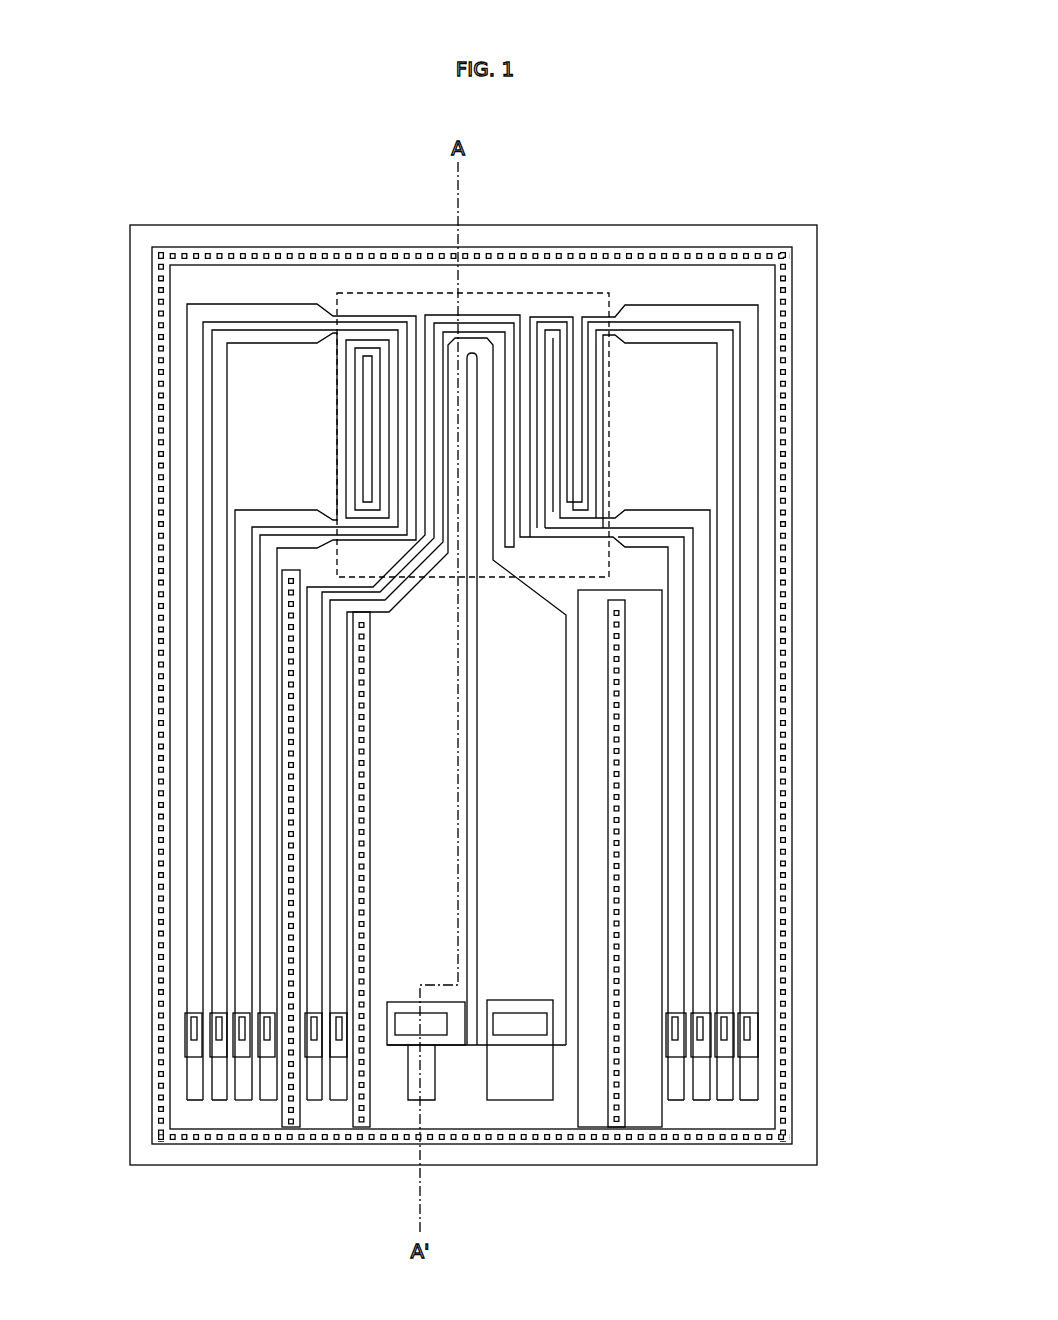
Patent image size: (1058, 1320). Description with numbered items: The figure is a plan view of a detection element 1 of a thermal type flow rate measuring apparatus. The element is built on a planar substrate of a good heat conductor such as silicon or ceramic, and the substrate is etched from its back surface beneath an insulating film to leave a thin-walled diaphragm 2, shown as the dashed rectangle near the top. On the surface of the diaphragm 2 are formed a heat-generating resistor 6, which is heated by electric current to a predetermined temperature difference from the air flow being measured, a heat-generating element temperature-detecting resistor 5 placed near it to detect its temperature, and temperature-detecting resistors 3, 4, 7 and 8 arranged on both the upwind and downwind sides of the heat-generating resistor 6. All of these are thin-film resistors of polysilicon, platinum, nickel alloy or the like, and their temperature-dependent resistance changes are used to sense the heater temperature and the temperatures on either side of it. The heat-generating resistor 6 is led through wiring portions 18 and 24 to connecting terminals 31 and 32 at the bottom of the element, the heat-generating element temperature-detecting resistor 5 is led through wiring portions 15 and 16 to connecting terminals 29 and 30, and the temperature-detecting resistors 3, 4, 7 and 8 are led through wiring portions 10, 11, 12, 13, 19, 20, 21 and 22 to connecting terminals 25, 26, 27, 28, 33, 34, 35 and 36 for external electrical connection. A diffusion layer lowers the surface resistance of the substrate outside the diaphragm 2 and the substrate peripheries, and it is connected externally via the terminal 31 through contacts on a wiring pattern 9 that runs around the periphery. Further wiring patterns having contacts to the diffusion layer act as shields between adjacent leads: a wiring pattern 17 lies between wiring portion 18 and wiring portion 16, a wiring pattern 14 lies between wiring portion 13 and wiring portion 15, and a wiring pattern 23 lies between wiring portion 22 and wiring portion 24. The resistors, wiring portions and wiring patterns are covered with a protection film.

The detection element 1 is at (192, 225).
The diaphragm 2 is at (337, 293).
The temperature-detecting resistor 3 is at (378, 325).
The temperature-detecting resistor 4 is at (392, 348).
The heat-generating element temperature-detecting resistor 5 is at (468, 320).
The heat-generating resistor 6 is at (482, 395).
The temperature-detecting resistor 7 is at (566, 365).
The temperature-detecting resistor 8 is at (580, 325).
The wiring pattern 9 is at (675, 257).
The wiring portion 10 is at (197, 393).
The wiring portion 11 is at (220, 468).
The wiring portion 12 is at (243, 547).
The wiring portion 13 is at (268, 600).
The wiring pattern 14 is at (290, 672).
The wiring portion 15 is at (318, 748).
The wiring portion 16 is at (338, 810).
The wiring pattern 17 is at (362, 878).
The wiring portion 18 is at (407, 958).
The wiring portion 19 is at (745, 415).
The wiring portion 20 is at (722, 487).
The wiring portion 21 is at (703, 565).
The wiring portion 22 is at (677, 620).
The wiring pattern 23 is at (635, 700).
The wiring portion 24 is at (515, 805).
The connecting terminal 25 is at (193, 1090).
The connecting terminal 26 is at (213, 1090).
The connecting terminal 27 is at (240, 1090).
The connecting terminal 28 is at (265, 1090).
The connecting terminal 29 is at (313, 1090).
The connecting terminal 30 is at (337, 1090).
The connecting terminal 31 is at (405, 1090).
The connecting terminal 32 is at (525, 1090).
The connecting terminal 33 is at (676, 1090).
The connecting terminal 34 is at (700, 1090).
The connecting terminal 35 is at (723, 1090).
The connecting terminal 36 is at (748, 1090).